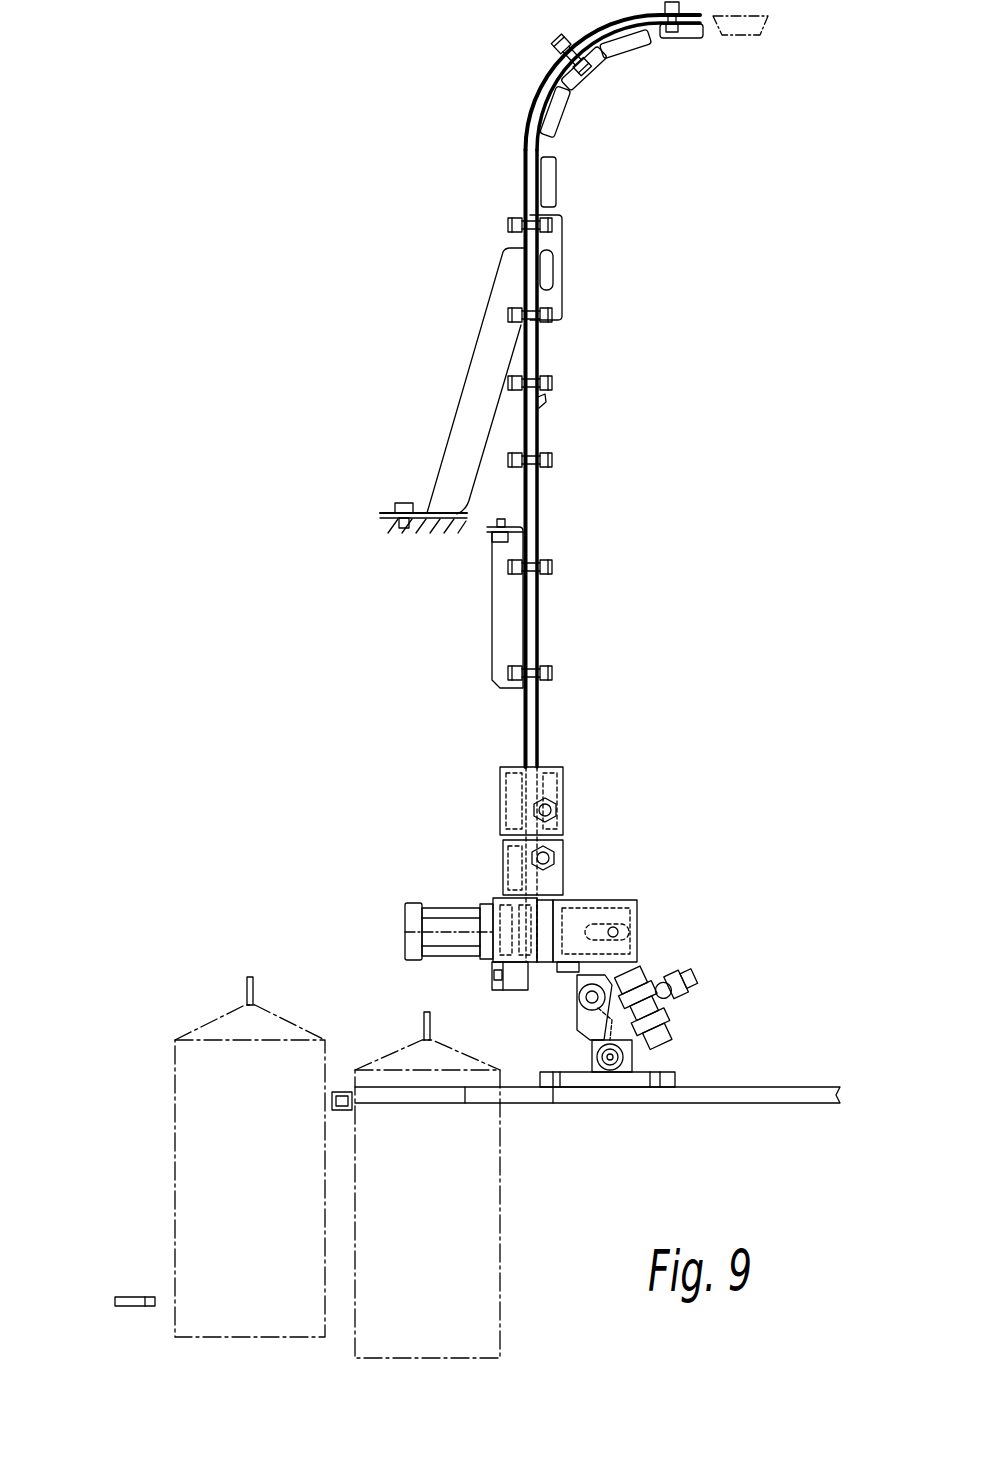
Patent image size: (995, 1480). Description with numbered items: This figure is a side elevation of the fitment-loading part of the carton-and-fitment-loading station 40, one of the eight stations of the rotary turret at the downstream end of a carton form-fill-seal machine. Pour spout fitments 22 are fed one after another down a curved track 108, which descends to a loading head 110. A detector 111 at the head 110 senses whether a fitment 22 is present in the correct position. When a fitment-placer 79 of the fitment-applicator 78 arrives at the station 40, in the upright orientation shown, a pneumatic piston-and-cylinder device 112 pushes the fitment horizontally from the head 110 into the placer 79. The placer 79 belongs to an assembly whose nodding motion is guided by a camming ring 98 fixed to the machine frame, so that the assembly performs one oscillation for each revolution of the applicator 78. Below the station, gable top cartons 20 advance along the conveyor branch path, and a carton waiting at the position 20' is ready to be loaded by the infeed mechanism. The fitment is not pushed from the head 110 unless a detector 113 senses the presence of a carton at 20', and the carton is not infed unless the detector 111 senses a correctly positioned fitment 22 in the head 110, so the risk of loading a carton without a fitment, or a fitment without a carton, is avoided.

The fitment 22 is at (590, 84).
The track 108 is at (540, 497).
The loading head 110 is at (497, 898).
The fitment-placer 79 is at (613, 917).
The pneumatic piston-and-cylinder device 112 is at (413, 918).
The camming ring 98 is at (650, 985).
The carton-and-fitment-loading station 40 is at (778, 982).
The carton position in branch path 20' is at (236, 1148).
The carton 20 is at (424, 1164).
The detector 111 is at (530, 970).
The fitment-applicator 78 is at (677, 1078).
The detector 113 is at (132, 1296).